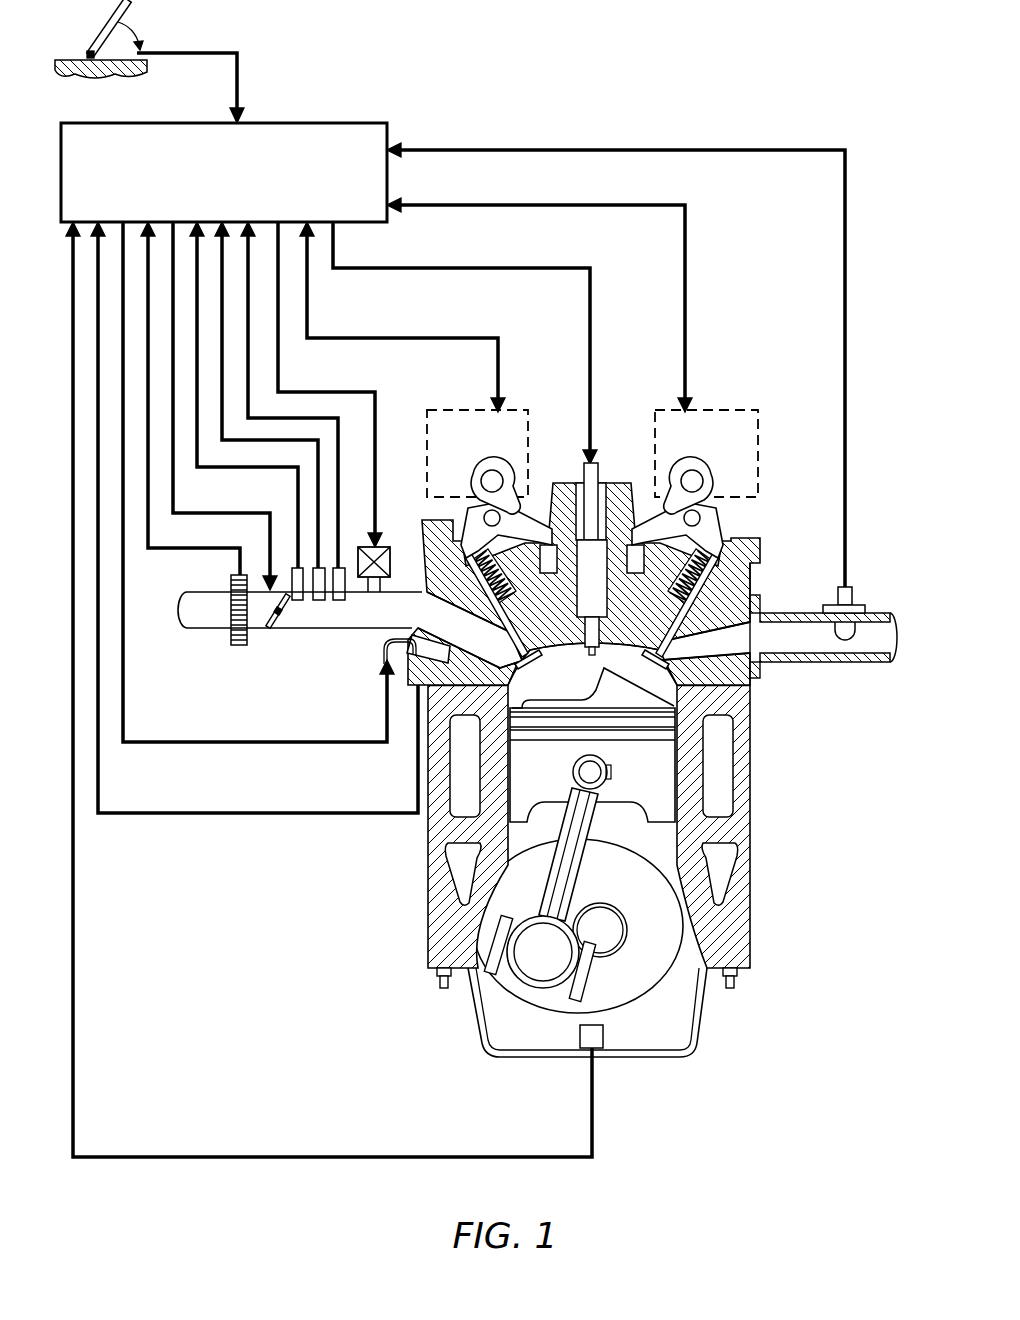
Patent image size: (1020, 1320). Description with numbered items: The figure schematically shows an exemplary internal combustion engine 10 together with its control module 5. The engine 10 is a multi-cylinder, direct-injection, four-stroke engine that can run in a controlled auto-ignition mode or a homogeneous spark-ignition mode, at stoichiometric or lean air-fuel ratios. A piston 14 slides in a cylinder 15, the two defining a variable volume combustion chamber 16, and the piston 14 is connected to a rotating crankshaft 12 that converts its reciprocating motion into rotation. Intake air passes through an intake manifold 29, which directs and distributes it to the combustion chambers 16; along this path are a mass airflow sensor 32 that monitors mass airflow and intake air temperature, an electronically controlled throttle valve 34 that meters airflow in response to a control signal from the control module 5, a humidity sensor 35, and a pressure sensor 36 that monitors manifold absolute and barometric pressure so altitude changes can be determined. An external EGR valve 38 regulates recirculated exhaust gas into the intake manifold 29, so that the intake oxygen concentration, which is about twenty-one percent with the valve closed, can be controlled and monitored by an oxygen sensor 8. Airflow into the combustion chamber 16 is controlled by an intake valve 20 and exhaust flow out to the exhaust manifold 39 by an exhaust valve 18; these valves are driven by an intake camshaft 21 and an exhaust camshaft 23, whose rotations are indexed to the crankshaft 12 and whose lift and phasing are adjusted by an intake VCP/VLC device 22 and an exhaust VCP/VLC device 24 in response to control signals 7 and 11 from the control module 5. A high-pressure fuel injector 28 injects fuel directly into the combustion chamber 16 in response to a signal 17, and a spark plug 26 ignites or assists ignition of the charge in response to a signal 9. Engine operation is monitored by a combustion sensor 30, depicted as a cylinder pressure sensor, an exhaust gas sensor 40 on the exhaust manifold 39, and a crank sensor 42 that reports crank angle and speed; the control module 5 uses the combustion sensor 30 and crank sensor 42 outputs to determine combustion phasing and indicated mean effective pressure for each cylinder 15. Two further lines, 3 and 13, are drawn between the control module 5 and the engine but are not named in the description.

The throttle actuator control signal 3 is at (186, 506).
The control module 5 is at (214, 183).
The control signal 7 is at (423, 331).
The oxygen sensor 8 is at (333, 602).
The signal 9 is at (503, 259).
The internal combustion engine 10 is at (756, 829).
The control signal 11 is at (600, 196).
The crankshaft 12 is at (650, 985).
The knock sensor signal 13 is at (183, 806).
The piston 14 is at (630, 783).
The cylinder 15 is at (238, 1149).
The combustion chamber 16 is at (540, 691).
The signal 17 is at (166, 736).
The exhaust valve 18 is at (668, 656).
The intake valve 20 is at (508, 633).
The intake camshaft 21 is at (493, 480).
The intake VCP/VLC device 22 is at (443, 443).
The exhaust camshaft 23 is at (690, 480).
The exhaust VCP/VLC device 24 is at (716, 443).
The spark plug 26 is at (596, 465).
The fuel injector 28 is at (390, 650).
The intake manifold 29 is at (403, 596).
The combustion sensor 30 is at (412, 642).
The mass airflow sensor 32 is at (238, 648).
The throttle valve 34 is at (271, 627).
The humidity sensor 35 is at (291, 598).
The pressure sensor 36 is at (317, 601).
The external exhaust gas recirculation (EGR) valve 38 is at (358, 598).
The exhaust manifold 39 is at (792, 613).
The exhaust gas sensor 40 is at (858, 605).
The crank sensor 42 is at (583, 1040).